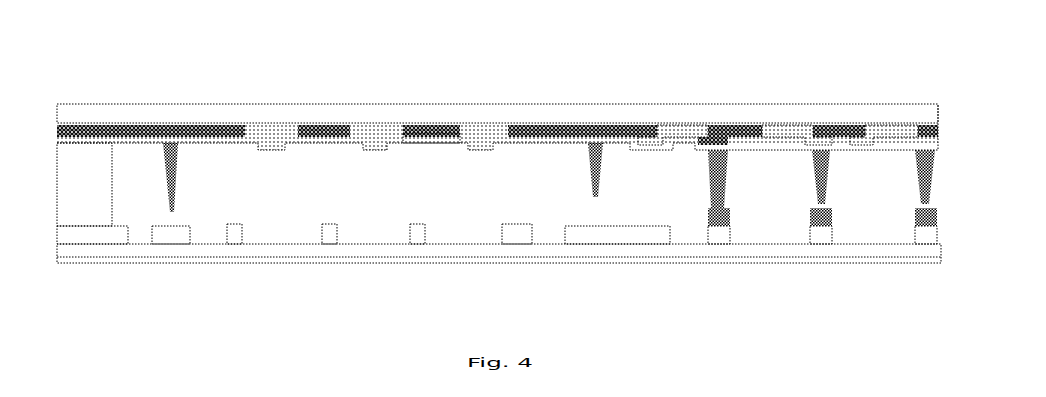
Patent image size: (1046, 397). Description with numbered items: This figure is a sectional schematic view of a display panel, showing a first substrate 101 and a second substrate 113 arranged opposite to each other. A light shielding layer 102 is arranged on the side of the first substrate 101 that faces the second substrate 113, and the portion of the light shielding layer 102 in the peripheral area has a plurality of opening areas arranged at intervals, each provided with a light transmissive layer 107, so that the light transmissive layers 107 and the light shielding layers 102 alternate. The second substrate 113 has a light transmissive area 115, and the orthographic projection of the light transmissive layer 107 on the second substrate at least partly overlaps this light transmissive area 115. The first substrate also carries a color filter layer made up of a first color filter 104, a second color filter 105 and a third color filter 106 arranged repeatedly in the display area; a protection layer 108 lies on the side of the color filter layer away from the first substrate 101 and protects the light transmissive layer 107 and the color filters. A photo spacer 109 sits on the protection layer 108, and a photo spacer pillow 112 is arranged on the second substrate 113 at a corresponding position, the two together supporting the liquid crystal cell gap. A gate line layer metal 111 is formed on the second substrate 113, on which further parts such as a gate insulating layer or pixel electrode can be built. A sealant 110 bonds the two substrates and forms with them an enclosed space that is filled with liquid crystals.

The first substrate 101 is at (92, 118).
The light shielding layer 102 is at (128, 132).
The first color filter 104 is at (688, 126).
The second color filter 105 is at (790, 128).
The third color filter 106 is at (893, 128).
The light transmissive layer 107 is at (266, 128).
The protection layer 108 is at (432, 130).
The photo spacer 109 is at (598, 140).
The sealant 110 is at (95, 240).
The gate line layer metal 111 is at (167, 240).
The photo spacer pillow 112 is at (828, 238).
The second substrate 113 is at (883, 252).
The light transmissive area 115 is at (295, 243).